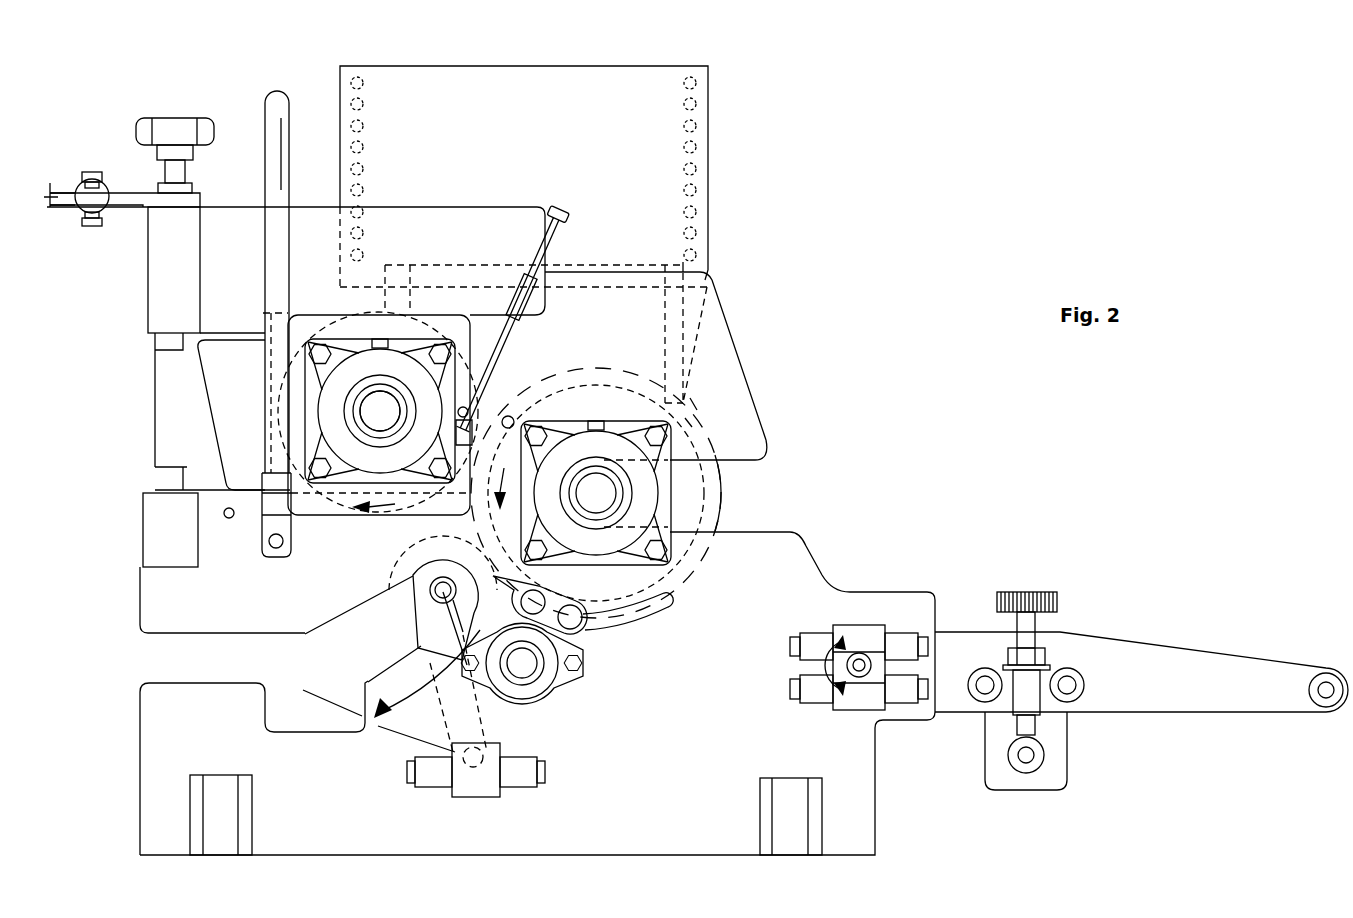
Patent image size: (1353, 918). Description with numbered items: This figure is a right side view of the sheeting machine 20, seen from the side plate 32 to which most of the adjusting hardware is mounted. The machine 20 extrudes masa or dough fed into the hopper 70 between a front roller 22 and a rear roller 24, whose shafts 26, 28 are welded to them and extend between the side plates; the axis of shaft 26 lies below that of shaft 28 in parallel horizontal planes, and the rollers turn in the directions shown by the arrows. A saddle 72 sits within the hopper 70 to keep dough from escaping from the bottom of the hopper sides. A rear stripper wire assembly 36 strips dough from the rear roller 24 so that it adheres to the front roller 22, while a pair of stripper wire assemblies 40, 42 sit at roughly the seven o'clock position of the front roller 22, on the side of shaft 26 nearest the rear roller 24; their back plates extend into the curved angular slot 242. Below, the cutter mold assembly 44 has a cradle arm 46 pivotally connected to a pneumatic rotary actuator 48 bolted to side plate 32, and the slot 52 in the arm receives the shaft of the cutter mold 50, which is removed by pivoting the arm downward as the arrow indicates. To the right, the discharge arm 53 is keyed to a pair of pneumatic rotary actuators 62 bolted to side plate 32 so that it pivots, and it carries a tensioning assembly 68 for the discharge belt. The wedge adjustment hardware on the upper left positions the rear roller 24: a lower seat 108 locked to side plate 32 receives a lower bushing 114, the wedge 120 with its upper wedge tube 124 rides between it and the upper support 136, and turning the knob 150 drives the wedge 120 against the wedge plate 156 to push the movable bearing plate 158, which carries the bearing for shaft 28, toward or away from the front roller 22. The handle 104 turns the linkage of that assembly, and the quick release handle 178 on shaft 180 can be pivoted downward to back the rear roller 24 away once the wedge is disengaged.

The sheeting machine 20 is at (771, 306).
The front roller 22 is at (721, 486).
The rear roller 24 is at (348, 322).
The shaft 26 is at (584, 504).
The shaft 28 is at (368, 422).
The side plate 32 is at (741, 364).
The rear stripper wire assembly 36 is at (524, 322).
The stripper wire assembly 40 is at (548, 592).
The stripper wire assembly 42 is at (573, 632).
The cutter mold assembly 44 is at (506, 716).
The cradle arm 46 is at (388, 624).
The pneumatic rotary actuator 48 is at (473, 782).
The cutter mold 50 is at (395, 607).
The slot 52 is at (398, 572).
The discharge arm 53 is at (1192, 638).
The pneumatic rotary actuators 62 is at (793, 672).
The tensioning assembly 68 is at (1066, 612).
The hopper 70 is at (510, 145).
The saddle 72 is at (627, 262).
The handle 104 is at (53, 208).
The lower seat 108 is at (155, 530).
The lower bushing 114 is at (158, 479).
The wedge 120 is at (173, 415).
The upper wedge tube 124 is at (193, 189).
The upper support 136 is at (167, 297).
The knob 150 is at (172, 118).
The wedge plate 156 is at (210, 373).
The movable bearing plate 158 is at (473, 310).
The handle 178 is at (265, 133).
The shaft 180 is at (277, 560).
The curved angular slot 242 is at (676, 610).